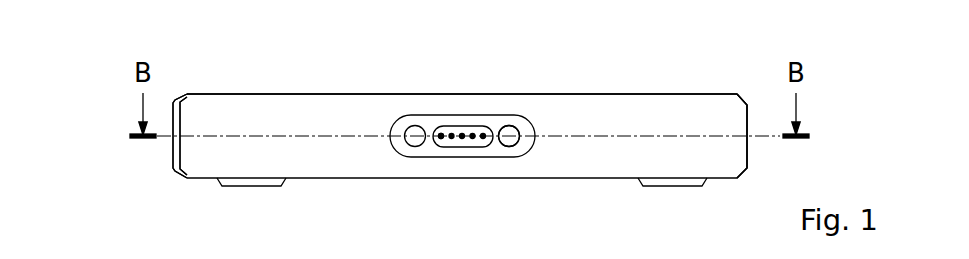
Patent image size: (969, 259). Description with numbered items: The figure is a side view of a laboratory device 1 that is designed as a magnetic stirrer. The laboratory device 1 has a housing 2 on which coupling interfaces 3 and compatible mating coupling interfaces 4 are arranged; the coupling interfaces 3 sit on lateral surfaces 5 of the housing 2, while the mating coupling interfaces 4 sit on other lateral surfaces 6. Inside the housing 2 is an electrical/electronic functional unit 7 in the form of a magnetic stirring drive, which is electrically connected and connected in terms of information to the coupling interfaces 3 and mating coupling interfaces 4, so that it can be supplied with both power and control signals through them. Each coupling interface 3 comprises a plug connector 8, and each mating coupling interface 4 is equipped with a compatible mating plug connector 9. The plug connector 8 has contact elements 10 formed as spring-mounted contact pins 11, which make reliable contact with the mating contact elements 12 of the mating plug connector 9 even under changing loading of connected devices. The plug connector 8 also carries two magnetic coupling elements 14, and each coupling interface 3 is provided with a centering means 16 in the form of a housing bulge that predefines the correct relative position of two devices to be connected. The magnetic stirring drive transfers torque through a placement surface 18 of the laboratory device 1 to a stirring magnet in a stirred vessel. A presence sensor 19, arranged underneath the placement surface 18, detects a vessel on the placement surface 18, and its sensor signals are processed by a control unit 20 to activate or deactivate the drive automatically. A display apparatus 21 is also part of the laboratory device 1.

The laboratory device 1 is at (213, 62).
The housing 2 is at (727, 94).
The coupling interface 3 is at (513, 125).
The mating coupling interface 4 is at (748, 119).
The lateral surface 5 is at (647, 117).
The lateral surface 6 is at (748, 149).
The functional unit 7 is at (349, 64).
The plug connector 8 is at (462, 130).
The mating plug connector 9 is at (816, 99).
The contact element 10 is at (487, 108).
The contact pin 11 is at (441, 131).
The mating contact element 12 is at (815, 151).
The magnetic coupling element 14 is at (413, 147).
The centering means 16 is at (183, 96).
The placement surface 18 is at (275, 94).
The presence sensor 19 is at (307, 64).
The control unit 20 is at (707, 74).
The display apparatus 21 is at (624, 74).